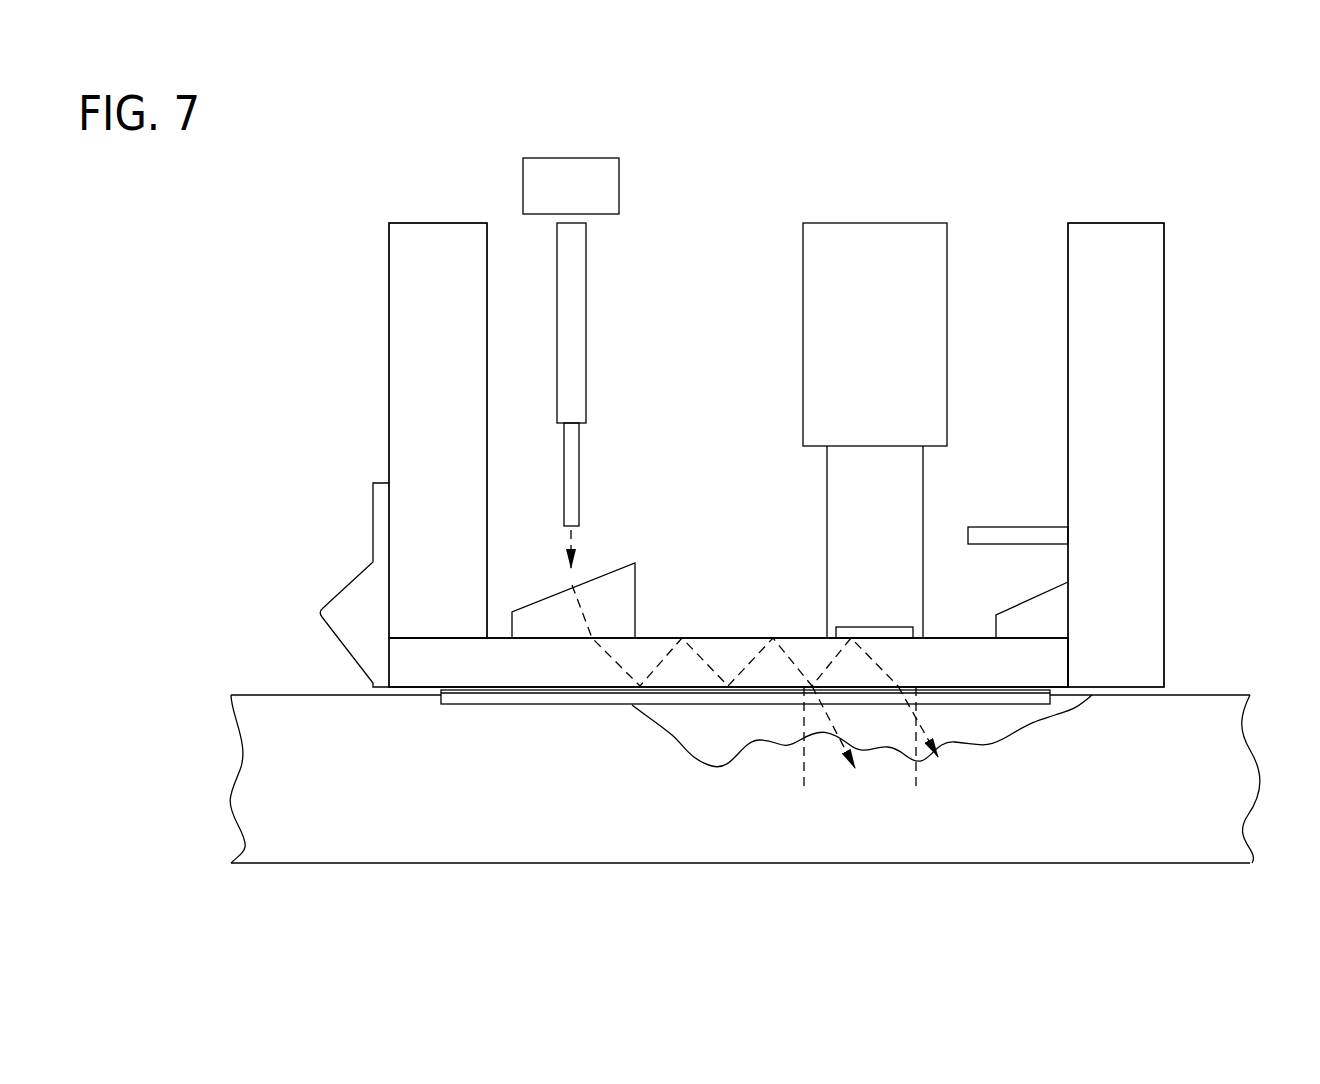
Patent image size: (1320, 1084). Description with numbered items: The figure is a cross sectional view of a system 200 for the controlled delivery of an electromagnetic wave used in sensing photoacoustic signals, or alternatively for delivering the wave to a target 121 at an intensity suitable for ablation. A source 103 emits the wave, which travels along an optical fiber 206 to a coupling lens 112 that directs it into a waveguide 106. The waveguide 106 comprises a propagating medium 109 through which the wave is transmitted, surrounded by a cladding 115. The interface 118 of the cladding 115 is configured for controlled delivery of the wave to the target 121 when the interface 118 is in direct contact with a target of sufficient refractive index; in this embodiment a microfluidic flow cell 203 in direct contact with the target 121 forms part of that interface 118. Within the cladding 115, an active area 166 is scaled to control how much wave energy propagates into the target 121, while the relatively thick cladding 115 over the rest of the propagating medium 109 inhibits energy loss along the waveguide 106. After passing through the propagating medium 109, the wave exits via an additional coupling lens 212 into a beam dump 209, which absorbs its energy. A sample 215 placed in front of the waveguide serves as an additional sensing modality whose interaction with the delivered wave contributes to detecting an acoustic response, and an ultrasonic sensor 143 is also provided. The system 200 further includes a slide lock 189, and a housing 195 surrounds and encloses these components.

The source 103 is at (578, 156).
The optical fiber 206 is at (604, 328).
The ultrasonic sensor 143 is at (790, 371).
The beam dump 209 is at (1024, 521).
The additional coupling lens 212 is at (1033, 606).
The coupling lens 112 is at (617, 562).
The propagating medium 109 is at (1052, 660).
The cladding 115 is at (1074, 636).
The waveguide 106 is at (360, 640).
The slide lock 189 is at (333, 578).
The housing 195 is at (373, 265).
The system 200 is at (212, 221).
The target 121 is at (210, 695).
The interface 118 is at (436, 705).
The microfluidic flow cell 203 is at (531, 710).
The sample 215 is at (695, 740).
The active area 166 is at (916, 787).